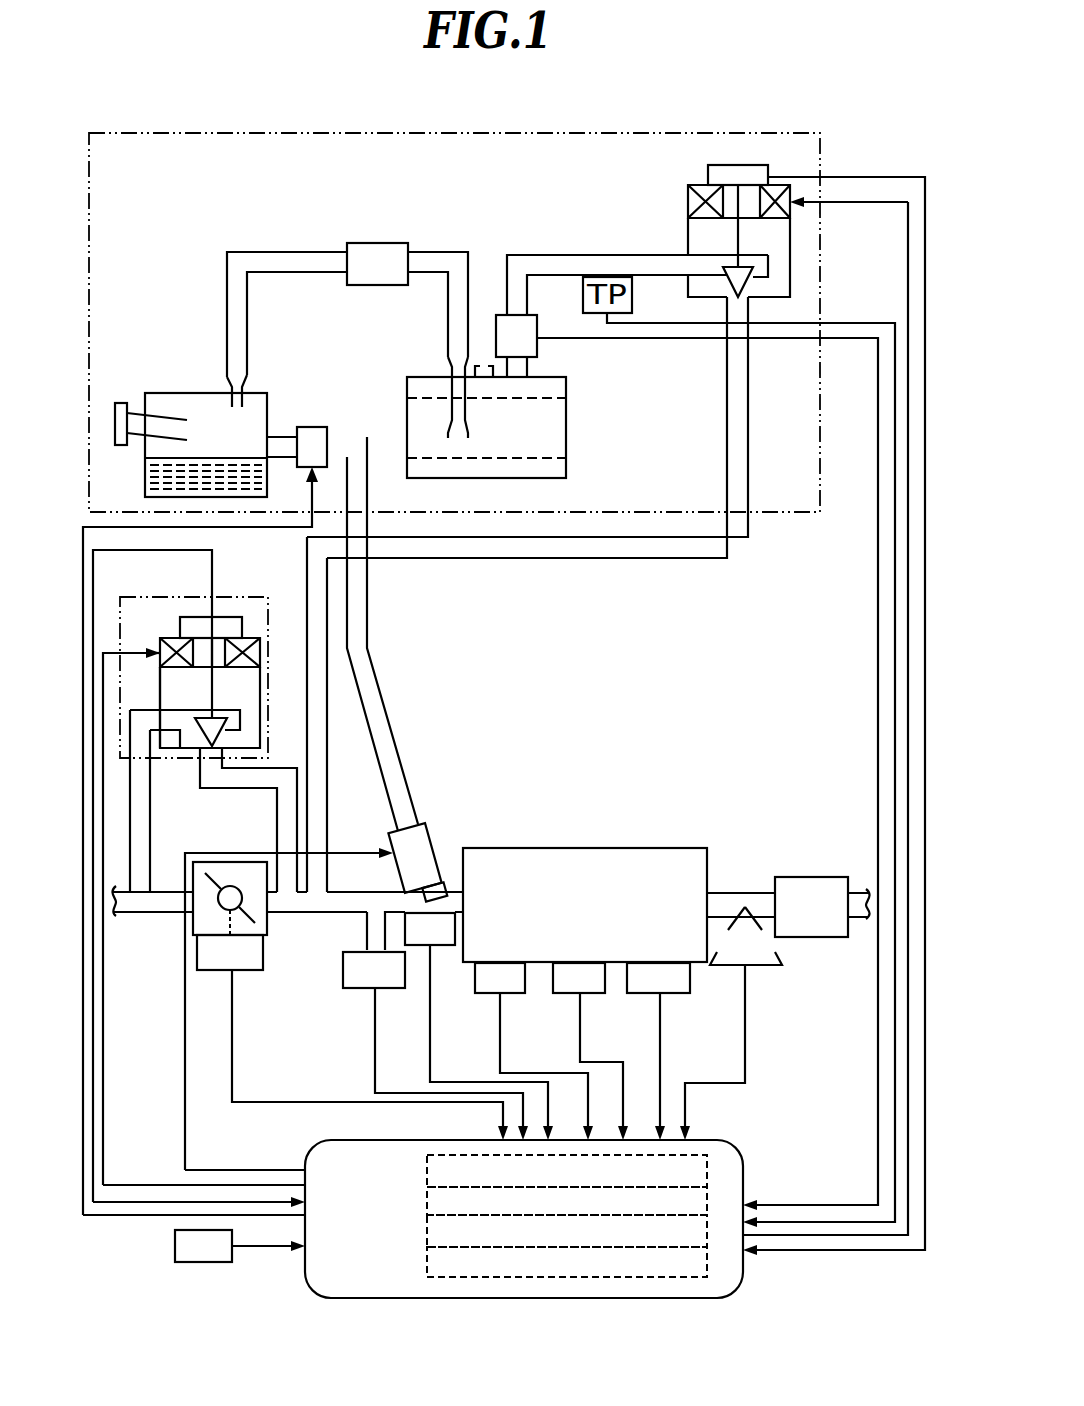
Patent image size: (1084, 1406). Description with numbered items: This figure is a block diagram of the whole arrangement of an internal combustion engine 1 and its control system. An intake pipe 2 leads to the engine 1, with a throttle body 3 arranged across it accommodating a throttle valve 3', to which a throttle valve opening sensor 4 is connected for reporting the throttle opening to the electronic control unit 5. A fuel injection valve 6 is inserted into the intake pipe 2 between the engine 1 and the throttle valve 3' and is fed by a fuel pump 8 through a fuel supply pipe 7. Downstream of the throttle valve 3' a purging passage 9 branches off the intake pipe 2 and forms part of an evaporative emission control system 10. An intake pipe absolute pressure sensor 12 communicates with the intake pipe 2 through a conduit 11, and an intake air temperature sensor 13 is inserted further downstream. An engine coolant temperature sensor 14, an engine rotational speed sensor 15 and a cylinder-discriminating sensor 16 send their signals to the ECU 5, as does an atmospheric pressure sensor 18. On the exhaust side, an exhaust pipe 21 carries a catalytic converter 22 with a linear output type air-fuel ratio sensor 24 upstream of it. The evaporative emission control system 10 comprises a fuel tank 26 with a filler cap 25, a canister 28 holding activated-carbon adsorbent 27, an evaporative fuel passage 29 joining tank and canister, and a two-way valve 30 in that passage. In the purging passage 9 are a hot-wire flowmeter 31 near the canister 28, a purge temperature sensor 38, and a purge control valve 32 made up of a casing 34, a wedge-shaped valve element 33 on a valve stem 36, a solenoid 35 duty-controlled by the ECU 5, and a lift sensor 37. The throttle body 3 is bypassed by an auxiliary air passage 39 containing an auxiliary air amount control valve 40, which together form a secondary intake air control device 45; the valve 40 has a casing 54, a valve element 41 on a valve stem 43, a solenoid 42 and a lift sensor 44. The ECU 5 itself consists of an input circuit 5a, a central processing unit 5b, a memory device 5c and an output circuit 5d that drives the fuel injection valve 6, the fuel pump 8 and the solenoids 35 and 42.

The internal combustion engine 1 is at (543, 848).
The intake pipe 2 is at (300, 914).
The throttle body 3 is at (230, 874).
The throttle valve 3' is at (230, 868).
The throttle valve opening sensor 4 is at (240, 975).
The electronic control unit 5 is at (712, 1128).
The input circuit 5a is at (707, 1176).
The central processing unit 5b is at (707, 1198).
The memory device 5c is at (707, 1232).
The output circuit 5d is at (707, 1266).
The fuel injection valve 6 is at (432, 840).
The fuel supply pipe 7 is at (378, 672).
The fuel pump 8 is at (312, 427).
The purging passage 9 is at (620, 562).
The evaporative emission control system 10 is at (625, 131).
The conduit 11 is at (367, 926).
The intake pipe absolute pressure sensor 12 is at (343, 965).
The intake air temperature sensor 13 is at (425, 946).
The engine coolant temperature sensor 14 is at (473, 972).
The engine rotational speed sensor 15 is at (560, 993).
The cylinder-discriminating sensor 16 is at (665, 994).
The atmospheric pressure sensor 18 is at (174, 1239).
The exhaust pipe 21 is at (757, 876).
The catalytic converter 22 is at (795, 877).
The linear output type air-fuel ratio sensor 24 is at (760, 967).
The filler cap 25 is at (122, 403).
The fuel tank 26 is at (196, 393).
The adsorbent 27 is at (555, 428).
The canister 28 is at (566, 470).
The evaporative fuel passage 29 is at (268, 252).
The two-way valve 30 is at (373, 243).
The hot-wire type flowmeter 31 is at (537, 346).
The purge control valve 32 is at (808, 288).
The valve element 33 is at (750, 285).
The casing 34 is at (760, 252).
The solenoid 35 is at (688, 208).
The valve stem 36 is at (742, 234).
The valve opening (lift) sensor 37 is at (705, 178).
The purge temperature sensor 38 is at (572, 273).
The auxiliary air passage 39 is at (152, 868).
The auxiliary air amount control valve 40 is at (262, 738).
The valve element 41 is at (198, 758).
The solenoid 42 is at (160, 650).
The valve stem 43 is at (262, 665).
The valve opening (lift) sensor 44 is at (178, 617).
The secondary intake air control device 45 is at (237, 590).
The casing 54 is at (160, 691).